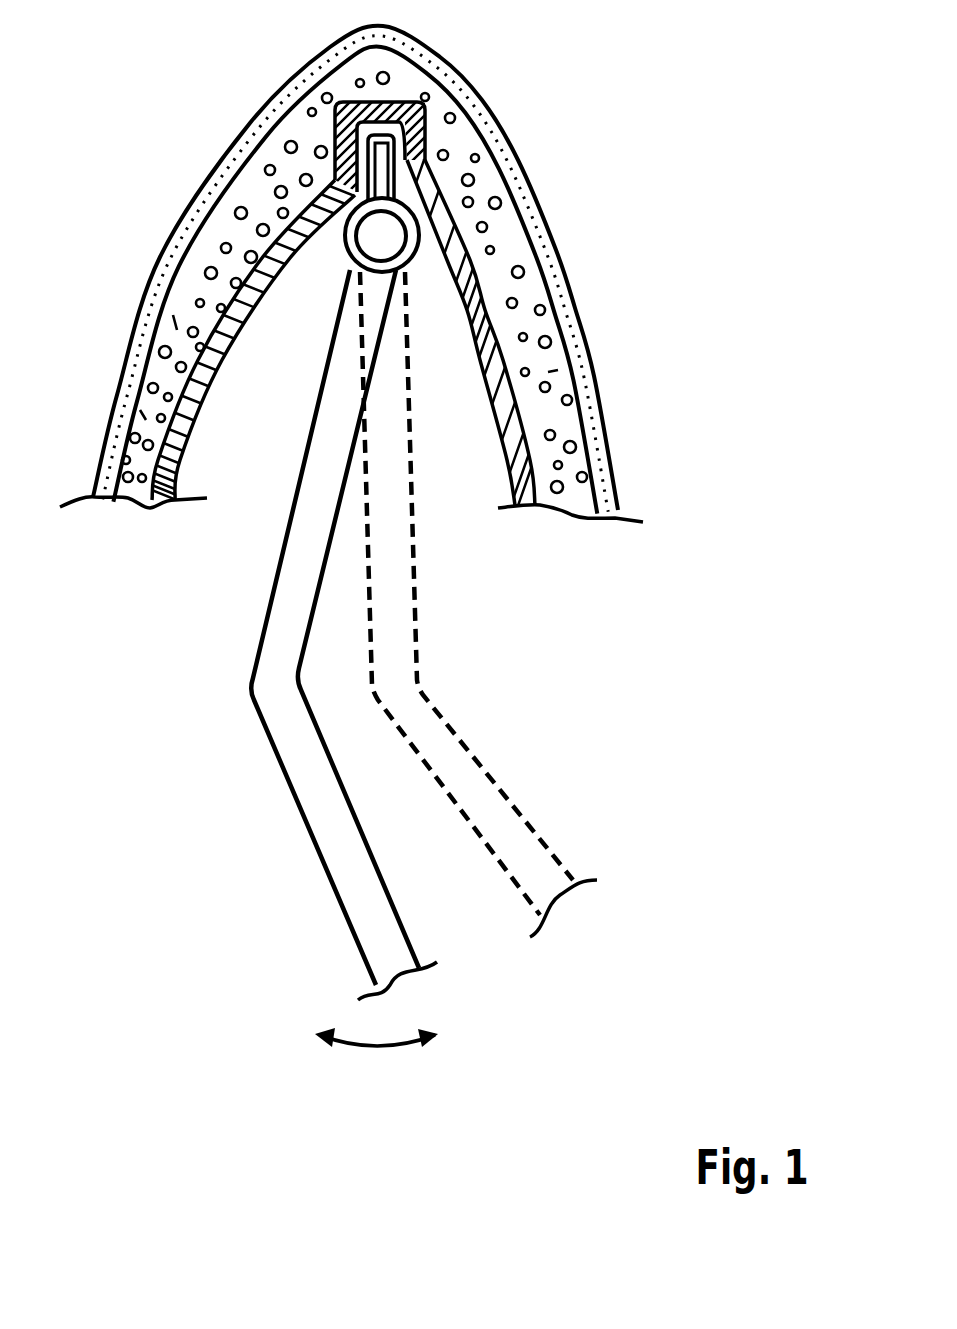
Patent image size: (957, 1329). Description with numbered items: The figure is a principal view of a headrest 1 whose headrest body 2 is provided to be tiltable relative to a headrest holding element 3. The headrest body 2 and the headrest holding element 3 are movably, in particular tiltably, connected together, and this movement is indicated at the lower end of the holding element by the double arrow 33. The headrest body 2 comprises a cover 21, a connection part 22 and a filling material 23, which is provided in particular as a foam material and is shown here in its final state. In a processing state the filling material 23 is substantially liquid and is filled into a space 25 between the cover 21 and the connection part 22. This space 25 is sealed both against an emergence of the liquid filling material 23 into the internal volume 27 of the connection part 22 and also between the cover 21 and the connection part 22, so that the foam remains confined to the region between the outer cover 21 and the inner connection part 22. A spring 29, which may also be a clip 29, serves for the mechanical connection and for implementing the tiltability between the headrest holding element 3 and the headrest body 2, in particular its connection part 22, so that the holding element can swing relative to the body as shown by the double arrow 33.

The headrest 1 is at (782, 28).
The headrest body 2 is at (705, 28).
The headrest holding element 3 is at (398, 703).
The cover 21 is at (512, 148).
The connection part 22 is at (513, 410).
The filling material 23 is at (507, 250).
The space 25 is at (533, 532).
The internal volume 27 is at (470, 406).
The spring or clip 29 is at (383, 158).
The double arrow 33 is at (383, 1047).